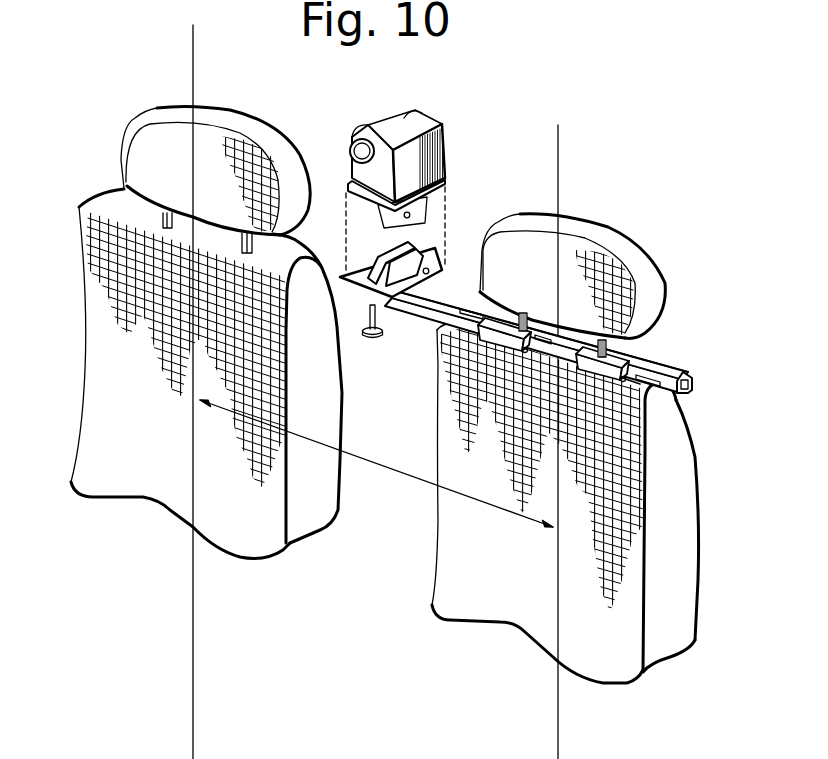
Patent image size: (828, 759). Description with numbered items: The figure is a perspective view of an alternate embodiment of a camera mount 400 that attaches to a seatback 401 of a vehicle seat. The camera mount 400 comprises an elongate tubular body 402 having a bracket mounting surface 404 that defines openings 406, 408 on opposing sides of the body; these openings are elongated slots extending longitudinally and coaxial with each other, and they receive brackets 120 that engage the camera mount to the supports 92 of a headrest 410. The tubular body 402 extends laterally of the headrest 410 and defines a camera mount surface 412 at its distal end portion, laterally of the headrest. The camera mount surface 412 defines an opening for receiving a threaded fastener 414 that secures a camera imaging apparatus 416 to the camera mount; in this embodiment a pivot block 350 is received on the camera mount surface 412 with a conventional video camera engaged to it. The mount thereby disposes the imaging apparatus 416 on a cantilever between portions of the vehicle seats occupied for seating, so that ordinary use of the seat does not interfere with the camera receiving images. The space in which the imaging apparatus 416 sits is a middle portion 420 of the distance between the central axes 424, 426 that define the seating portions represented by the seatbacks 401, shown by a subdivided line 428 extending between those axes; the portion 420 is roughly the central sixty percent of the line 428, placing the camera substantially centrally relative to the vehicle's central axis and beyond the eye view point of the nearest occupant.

The supports of the headrest 92 is at (657, 355).
The brackets 120 is at (610, 428).
The pivot block 350 is at (423, 292).
The camera mount 400 is at (690, 372).
The seatback 401 is at (519, 583).
The elongate tubular body 402 is at (628, 347).
The bracket mounting surface 404 is at (673, 393).
The opening 406 is at (490, 347).
The opening 408 is at (652, 392).
The headrest 410 is at (572, 228).
The camera mount surface 412 is at (576, 320).
The threaded fastener 414 is at (373, 337).
The camera imaging apparatus 416 is at (397, 114).
The middle portion 420 is at (392, 521).
The central axis 424 is at (197, 558).
The central axis 426 is at (558, 621).
The subdivided line 428 is at (432, 482).